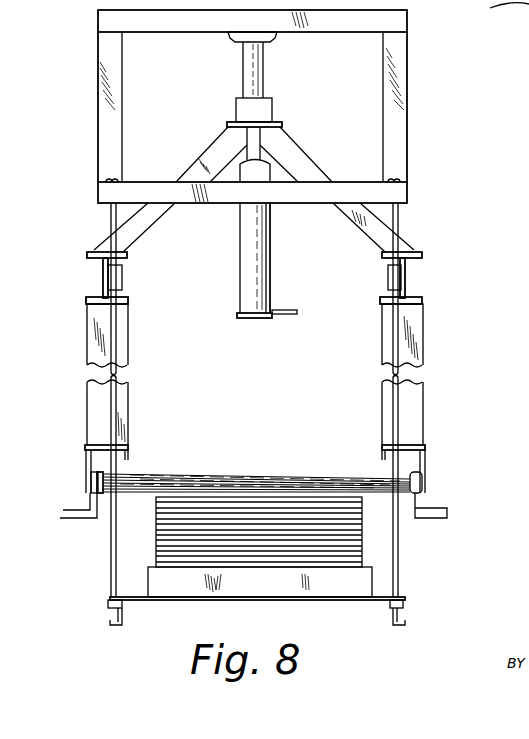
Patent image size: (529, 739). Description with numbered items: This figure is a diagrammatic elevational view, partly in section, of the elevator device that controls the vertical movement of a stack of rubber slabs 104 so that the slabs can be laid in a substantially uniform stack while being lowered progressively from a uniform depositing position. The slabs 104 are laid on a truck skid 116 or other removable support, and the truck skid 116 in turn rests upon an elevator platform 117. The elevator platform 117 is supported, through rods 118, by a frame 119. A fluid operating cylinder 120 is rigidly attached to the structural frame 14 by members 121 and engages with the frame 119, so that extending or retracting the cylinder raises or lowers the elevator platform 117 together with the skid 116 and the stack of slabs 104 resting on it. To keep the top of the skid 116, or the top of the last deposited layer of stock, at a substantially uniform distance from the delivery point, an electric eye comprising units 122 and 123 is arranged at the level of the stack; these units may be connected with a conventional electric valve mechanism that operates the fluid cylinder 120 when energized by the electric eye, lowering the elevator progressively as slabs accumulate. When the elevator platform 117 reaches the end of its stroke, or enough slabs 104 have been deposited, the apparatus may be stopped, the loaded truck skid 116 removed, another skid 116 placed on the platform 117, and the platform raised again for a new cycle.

The frame 119 is at (397, 88).
The members 121 is at (196, 172).
The fluid operating cylinder 120 is at (249, 254).
The structural frame 14 is at (413, 318).
The rods 118 is at (396, 408).
The electric eye unit 122 is at (418, 483).
The electric eye unit 123 is at (95, 485).
The slabs 104 is at (358, 528).
The truck skid 116 is at (360, 581).
The elevator platform 117 is at (137, 593).